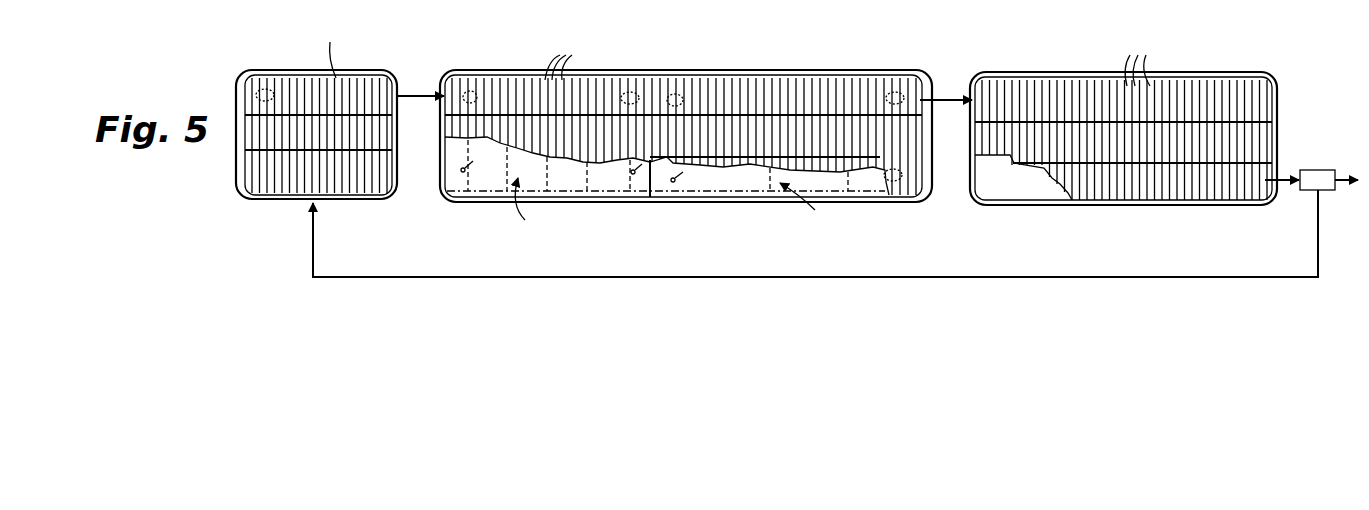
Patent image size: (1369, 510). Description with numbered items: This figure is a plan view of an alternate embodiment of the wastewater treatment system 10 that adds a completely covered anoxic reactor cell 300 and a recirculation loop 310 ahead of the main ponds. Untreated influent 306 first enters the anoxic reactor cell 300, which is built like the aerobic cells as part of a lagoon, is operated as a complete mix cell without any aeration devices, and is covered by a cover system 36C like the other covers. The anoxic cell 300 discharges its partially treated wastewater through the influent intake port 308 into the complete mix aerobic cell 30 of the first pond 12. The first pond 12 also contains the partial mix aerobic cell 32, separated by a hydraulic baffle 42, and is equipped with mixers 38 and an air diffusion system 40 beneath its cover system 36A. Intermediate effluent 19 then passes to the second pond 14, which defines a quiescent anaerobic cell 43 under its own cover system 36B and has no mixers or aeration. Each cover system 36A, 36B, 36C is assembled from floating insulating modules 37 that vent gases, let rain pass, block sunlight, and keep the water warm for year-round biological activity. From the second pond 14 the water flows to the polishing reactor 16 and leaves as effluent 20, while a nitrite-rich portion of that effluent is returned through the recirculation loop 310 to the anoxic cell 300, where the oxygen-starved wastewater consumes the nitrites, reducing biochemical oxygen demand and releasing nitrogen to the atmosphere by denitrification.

The system 10 is at (826, 56).
The first pond 12 is at (680, 70).
The second pond 14 is at (1040, 68).
The polishing reactor 16 is at (1318, 168).
The intermediate effluent 19 is at (948, 97).
The effluent 20 is at (1278, 182).
The complete mix aerobic cell 30 is at (548, 200).
The partial mix aerobic cell 32 is at (757, 197).
The cover system 36A is at (724, 96).
The cover system 36B is at (1202, 98).
The cover system 36C is at (367, 82).
The modules 37 is at (741, 53).
The mixers 38 is at (259, 87).
The air diffusion system 40 is at (676, 211).
The hydraulic baffle 42 is at (652, 192).
The quiescent anaerobic cell 43 is at (1100, 184).
The anoxic reactor cell 300 is at (262, 201).
The untreated influent 306 is at (311, 66).
The influent intake port 308 is at (432, 94).
The recirculation loop 310 is at (522, 278).